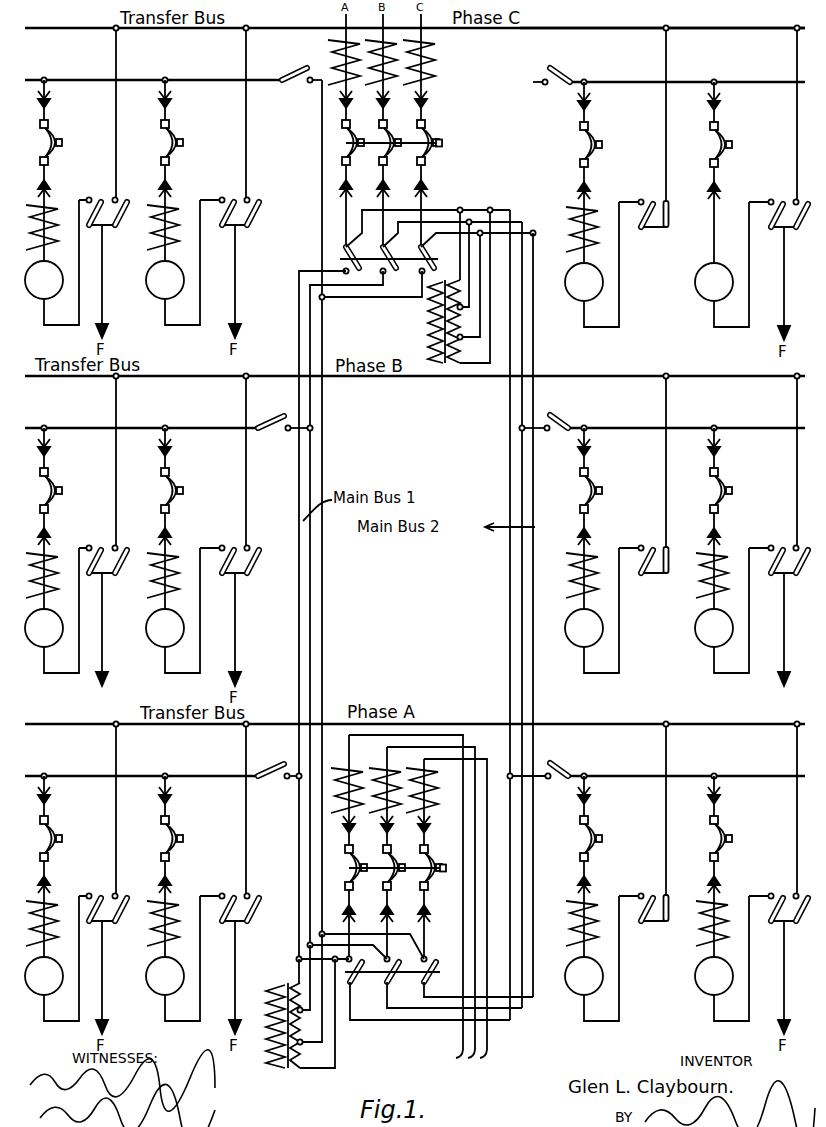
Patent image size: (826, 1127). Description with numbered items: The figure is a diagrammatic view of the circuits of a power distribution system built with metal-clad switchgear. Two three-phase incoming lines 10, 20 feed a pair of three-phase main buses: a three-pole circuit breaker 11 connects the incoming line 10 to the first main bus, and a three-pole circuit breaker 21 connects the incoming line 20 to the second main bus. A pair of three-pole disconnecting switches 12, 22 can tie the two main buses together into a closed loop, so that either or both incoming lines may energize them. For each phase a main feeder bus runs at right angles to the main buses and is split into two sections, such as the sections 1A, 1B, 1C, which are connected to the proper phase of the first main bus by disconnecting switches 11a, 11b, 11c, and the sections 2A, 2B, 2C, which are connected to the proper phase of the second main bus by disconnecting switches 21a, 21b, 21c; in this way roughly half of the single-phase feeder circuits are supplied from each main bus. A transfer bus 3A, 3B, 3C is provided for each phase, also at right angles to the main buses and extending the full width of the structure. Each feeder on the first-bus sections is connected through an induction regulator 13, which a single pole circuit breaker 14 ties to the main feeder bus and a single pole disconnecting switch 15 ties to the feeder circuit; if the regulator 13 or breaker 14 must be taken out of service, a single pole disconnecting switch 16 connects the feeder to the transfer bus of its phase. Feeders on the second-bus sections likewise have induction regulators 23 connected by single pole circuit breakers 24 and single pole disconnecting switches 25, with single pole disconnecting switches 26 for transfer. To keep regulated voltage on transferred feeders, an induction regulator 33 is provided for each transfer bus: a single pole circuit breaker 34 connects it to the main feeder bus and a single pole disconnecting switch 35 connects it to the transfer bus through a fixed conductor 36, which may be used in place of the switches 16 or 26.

The three-phase incoming line 10 is at (490, 1090).
The three-pole circuit breaker 11 is at (456, 861).
The three-pole disconnecting switch 12 is at (400, 977).
The induction regulator 13 is at (37, 303).
The single pole circuit breaker 14 is at (56, 143).
The single pole disconnecting switch 15 is at (100, 546).
The single pole disconnecting switch 16 is at (125, 563).
The three-phase incoming line 20 is at (326, 27).
The three-pole circuit breaker 21 is at (474, 143).
The three-pole disconnecting switch 22 is at (400, 300).
The induction regulator 23 is at (698, 302).
The single pole circuit breaker 24 is at (728, 485).
The single pole disconnecting switch 25 is at (782, 545).
The single pole disconnecting switch 26 is at (798, 577).
The induction regulator 33 is at (567, 297).
The single pole circuit breaker 34 is at (598, 485).
The single pole disconnecting switch 35 is at (653, 545).
The fixed conductor 36 is at (669, 554).
The disconnecting switch 11a is at (284, 765).
The disconnecting switch 11b is at (284, 417).
The disconnecting switch 11c is at (296, 69).
The disconnecting switch 21a is at (558, 762).
The disconnecting switch 21b is at (558, 414).
The disconnecting switch 21c is at (566, 62).
The main feeder bus section 1A is at (30, 1008).
The main feeder bus section 1B is at (30, 660).
The main feeder bus section 1C is at (148, 192).
The main feeder bus section 2A is at (560, 1001).
The main feeder bus section 2B is at (676, 541).
The main feeder bus section 2C is at (676, 196).
The transfer bus 3A is at (415, 713).
The transfer bus 3B is at (415, 372).
The transfer bus 3C is at (662, 19).